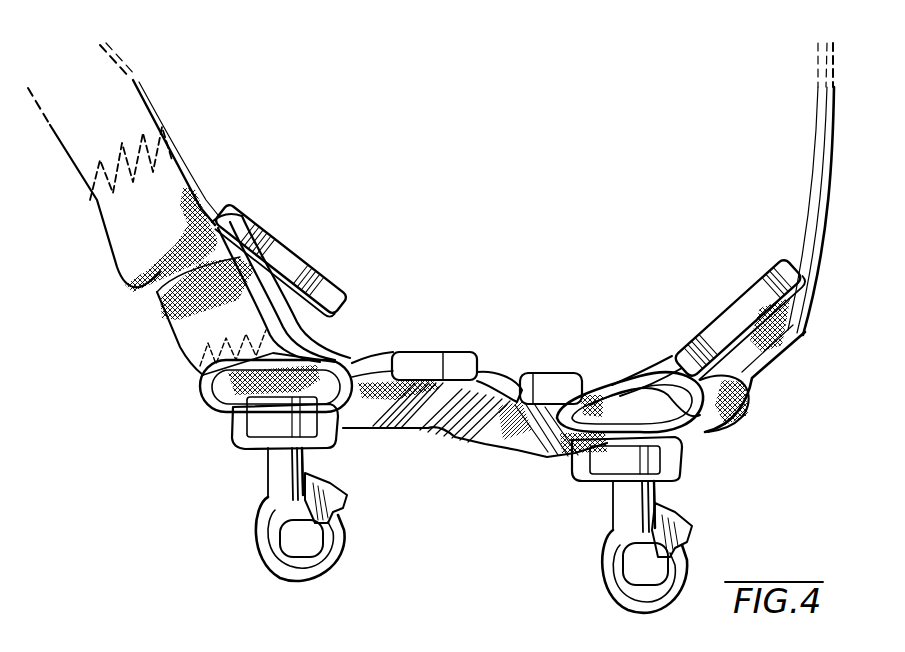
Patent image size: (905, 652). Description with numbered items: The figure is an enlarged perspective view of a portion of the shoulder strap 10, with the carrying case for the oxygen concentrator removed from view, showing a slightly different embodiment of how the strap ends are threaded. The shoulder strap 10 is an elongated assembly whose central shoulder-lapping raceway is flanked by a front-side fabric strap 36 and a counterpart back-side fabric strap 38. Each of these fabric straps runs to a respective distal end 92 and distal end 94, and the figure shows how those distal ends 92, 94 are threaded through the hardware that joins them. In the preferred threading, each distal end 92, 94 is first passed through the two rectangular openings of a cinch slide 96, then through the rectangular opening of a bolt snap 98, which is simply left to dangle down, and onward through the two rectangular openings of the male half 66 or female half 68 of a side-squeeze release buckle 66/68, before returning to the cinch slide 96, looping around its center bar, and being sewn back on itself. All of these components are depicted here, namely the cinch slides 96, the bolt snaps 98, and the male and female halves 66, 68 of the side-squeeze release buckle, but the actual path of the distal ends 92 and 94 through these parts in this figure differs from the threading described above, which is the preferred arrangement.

The shoulder strap 10 is at (522, 118).
The front-side fabric strap 36 is at (822, 93).
The back-side fabric strap 38 is at (157, 100).
The male half of side-squeeze release buckle 66 is at (497, 377).
The female half of side-squeeze release buckle 68 is at (550, 383).
The distal end of back-side fabric strap 92 is at (207, 413).
The distal end of front-side fabric strap 94 is at (722, 412).
The cinch slide 96 is at (287, 237).
The bolt snap 98 is at (283, 480).